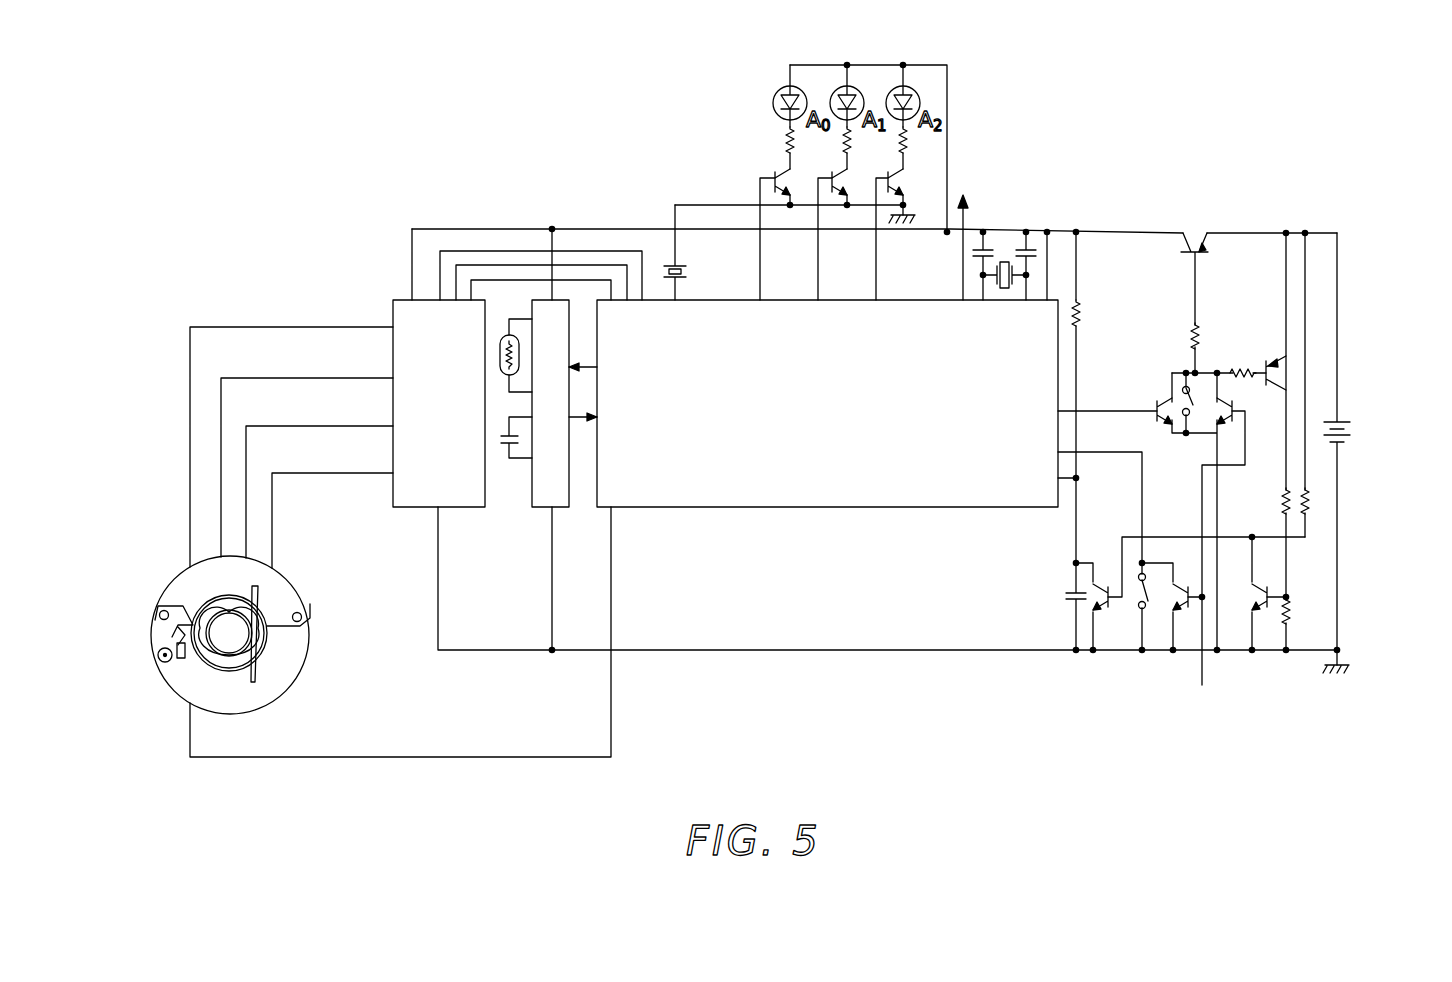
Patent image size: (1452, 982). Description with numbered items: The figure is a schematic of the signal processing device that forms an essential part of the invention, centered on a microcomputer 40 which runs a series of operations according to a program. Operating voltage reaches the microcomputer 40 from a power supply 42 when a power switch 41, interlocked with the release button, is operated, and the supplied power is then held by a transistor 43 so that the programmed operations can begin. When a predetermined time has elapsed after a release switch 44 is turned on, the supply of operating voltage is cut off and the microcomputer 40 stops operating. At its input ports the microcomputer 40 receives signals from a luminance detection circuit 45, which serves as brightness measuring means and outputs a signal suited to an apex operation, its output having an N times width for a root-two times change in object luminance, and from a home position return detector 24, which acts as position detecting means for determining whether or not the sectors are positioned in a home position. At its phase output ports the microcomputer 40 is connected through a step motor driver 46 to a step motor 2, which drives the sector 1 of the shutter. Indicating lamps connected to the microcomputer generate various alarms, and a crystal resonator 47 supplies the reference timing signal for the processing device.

The sector 1 is at (258, 674).
The step motor 2 is at (282, 594).
The home position return detector 24 is at (178, 660).
The microcomputer 40 is at (737, 296).
The power switch 41 is at (1195, 400).
The power supply 42 is at (1356, 431).
The transistor 43 is at (1154, 412).
The release switch 44 is at (1140, 603).
The luminance detection circuit 45 is at (538, 508).
The step motor driver 46 is at (417, 508).
The crystal resonator 47 is at (1003, 256).